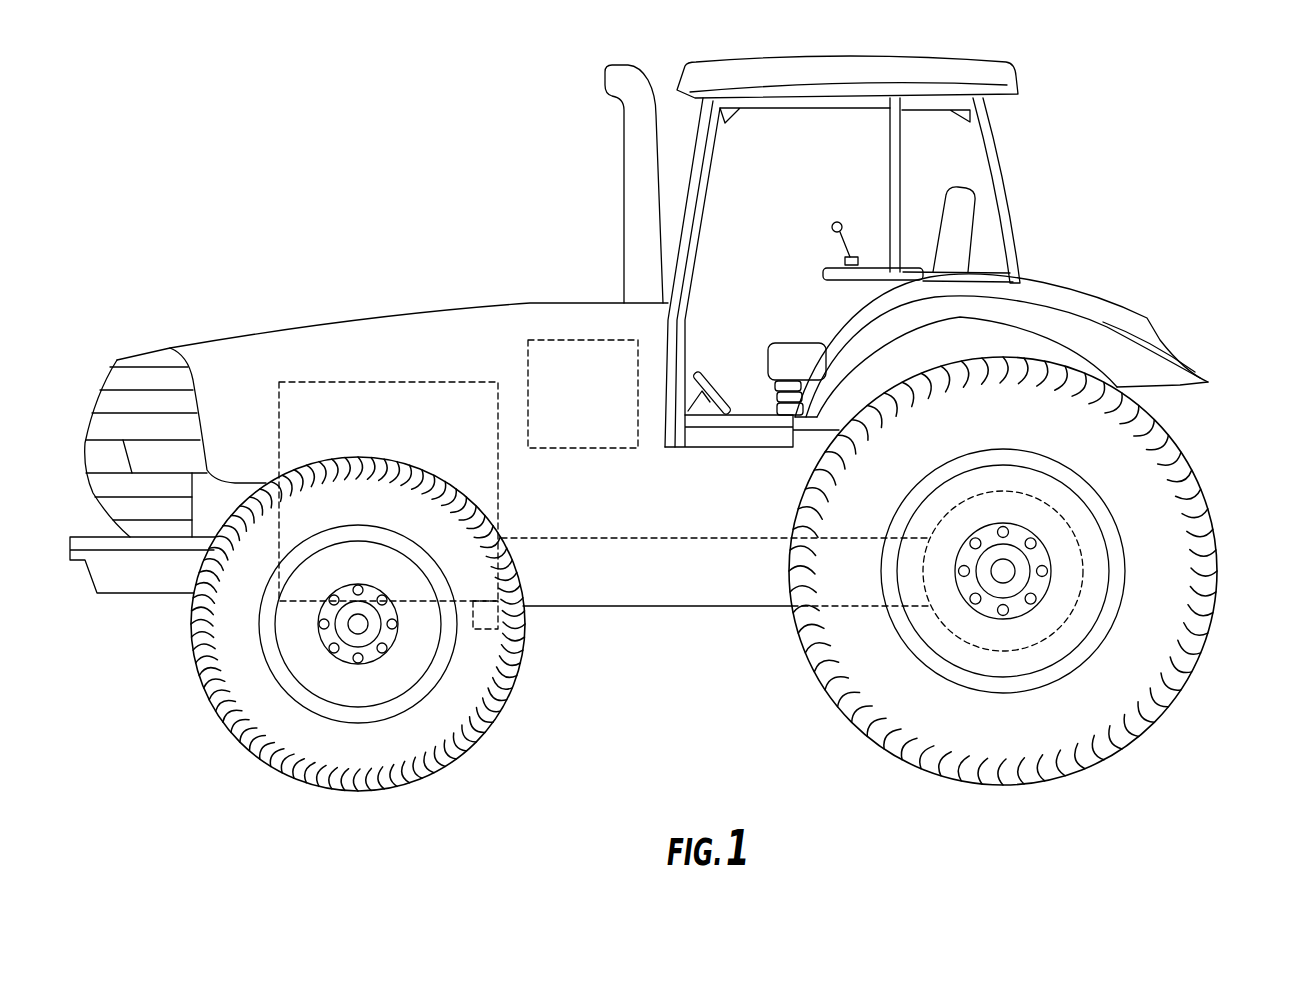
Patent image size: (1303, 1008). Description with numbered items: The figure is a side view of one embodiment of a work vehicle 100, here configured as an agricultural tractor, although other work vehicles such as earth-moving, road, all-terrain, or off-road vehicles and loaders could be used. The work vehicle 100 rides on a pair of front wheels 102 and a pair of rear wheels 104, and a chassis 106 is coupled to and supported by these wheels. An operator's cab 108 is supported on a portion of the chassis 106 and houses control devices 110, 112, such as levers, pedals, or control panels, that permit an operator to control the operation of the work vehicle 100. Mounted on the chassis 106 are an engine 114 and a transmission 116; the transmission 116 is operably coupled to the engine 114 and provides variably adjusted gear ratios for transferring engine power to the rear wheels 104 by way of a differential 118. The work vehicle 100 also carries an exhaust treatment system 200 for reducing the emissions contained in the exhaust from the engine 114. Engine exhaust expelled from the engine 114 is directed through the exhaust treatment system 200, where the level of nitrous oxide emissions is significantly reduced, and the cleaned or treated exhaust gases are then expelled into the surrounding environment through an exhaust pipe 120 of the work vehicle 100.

The work vehicle 100 is at (283, 205).
The front wheels 102 is at (192, 650).
The rear wheels 104 is at (1217, 604).
The chassis 106 is at (595, 606).
The operator's cab 108 is at (1008, 207).
The control device 110 is at (836, 222).
The control device 112 is at (722, 392).
The engine 114 is at (357, 380).
The transmission 116 is at (660, 538).
The differential 118 is at (1063, 538).
The exhaust pipe 120 is at (634, 166).
The exhaust treatment system 200 is at (560, 338).